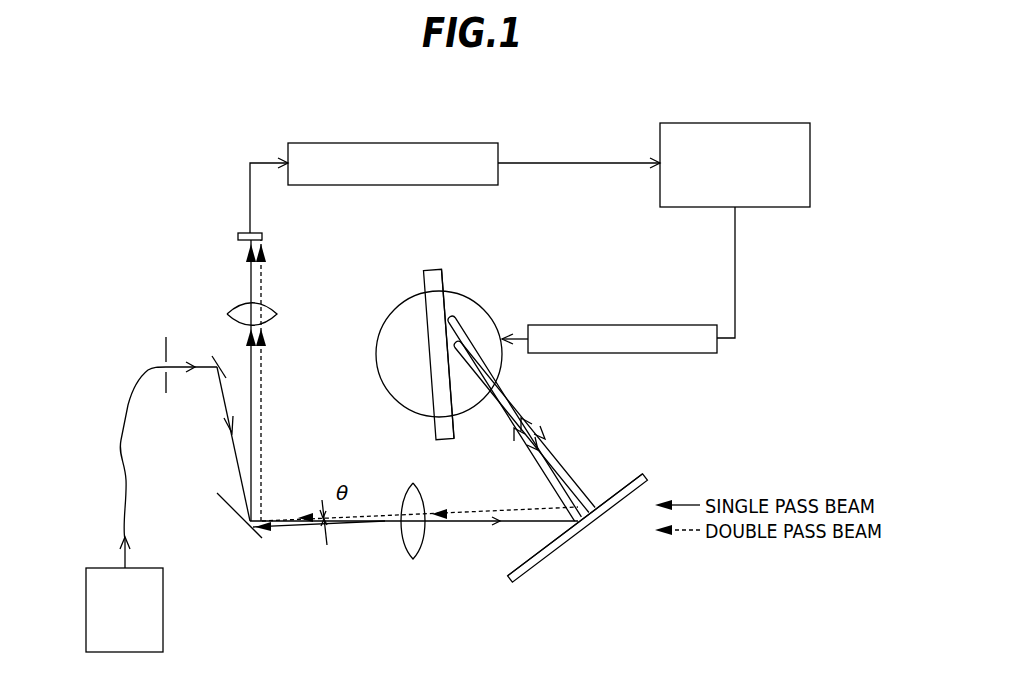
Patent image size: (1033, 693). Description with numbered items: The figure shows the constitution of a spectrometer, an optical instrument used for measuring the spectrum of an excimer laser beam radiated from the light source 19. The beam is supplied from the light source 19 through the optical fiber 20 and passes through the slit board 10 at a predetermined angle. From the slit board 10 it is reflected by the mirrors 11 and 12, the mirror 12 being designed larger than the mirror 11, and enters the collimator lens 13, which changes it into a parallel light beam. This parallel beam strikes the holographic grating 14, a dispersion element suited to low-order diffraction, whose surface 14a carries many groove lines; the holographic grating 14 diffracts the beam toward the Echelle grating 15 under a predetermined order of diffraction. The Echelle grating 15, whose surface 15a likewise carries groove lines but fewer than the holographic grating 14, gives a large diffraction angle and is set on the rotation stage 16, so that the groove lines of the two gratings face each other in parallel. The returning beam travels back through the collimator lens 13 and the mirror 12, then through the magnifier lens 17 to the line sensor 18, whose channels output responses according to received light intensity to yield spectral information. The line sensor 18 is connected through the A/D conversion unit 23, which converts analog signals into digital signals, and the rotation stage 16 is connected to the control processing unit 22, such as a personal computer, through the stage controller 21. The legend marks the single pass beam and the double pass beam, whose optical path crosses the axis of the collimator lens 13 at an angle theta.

The slit board 10 is at (166, 338).
The mirror 11 is at (223, 353).
The mirror 12 is at (216, 498).
The collimator lens 13 is at (403, 548).
The holographic grating 14 is at (614, 503).
The surface of holographic grating 14a is at (637, 472).
The Echelle grating 15 is at (437, 373).
The surface of Echelle grating 15a is at (443, 282).
The rotation stage 16 is at (385, 332).
The magnifier lens 17 is at (243, 304).
The line sensor 18 is at (238, 237).
The light source 19 is at (165, 625).
The optical fiber 20 is at (120, 440).
The stage controller 21 is at (702, 353).
The control processing unit 22 is at (788, 208).
The A/D conversion unit 23 is at (315, 143).